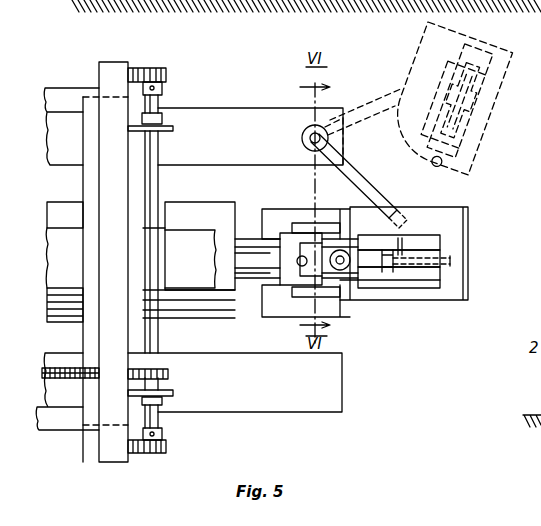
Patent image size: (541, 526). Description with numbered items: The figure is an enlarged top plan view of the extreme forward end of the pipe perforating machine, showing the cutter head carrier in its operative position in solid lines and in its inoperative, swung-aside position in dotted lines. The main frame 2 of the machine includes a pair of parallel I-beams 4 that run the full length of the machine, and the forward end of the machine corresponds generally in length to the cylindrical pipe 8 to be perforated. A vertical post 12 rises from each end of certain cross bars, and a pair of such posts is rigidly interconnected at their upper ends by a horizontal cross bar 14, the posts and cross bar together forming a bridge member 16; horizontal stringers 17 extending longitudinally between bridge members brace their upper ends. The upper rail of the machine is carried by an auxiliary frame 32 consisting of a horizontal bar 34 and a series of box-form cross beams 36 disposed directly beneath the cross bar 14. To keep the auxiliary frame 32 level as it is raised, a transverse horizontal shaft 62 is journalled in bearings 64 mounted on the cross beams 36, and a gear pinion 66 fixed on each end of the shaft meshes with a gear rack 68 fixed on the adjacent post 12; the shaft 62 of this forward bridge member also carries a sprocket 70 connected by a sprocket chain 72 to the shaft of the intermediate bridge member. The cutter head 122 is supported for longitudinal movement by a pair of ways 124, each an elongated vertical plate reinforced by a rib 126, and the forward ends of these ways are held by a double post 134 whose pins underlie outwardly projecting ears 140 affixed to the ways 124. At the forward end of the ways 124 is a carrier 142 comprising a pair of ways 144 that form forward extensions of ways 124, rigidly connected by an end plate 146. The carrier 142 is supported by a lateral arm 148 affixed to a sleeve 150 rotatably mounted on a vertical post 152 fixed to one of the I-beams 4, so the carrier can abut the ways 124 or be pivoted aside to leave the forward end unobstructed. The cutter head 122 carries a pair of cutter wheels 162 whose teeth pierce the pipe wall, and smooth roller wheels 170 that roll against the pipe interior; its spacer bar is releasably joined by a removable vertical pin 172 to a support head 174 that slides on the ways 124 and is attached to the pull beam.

The main frame 2 is at (100, 60).
The I-beams 4 is at (236, 108).
The cylindrical pipe 8 is at (175, 320).
The vertical post 12 is at (112, 62).
The cross bar 14 is at (107, 262).
The bridge member 16 is at (92, 246).
The horizontal stringers 17 is at (55, 96).
The auxiliary frame 32 is at (179, 220).
The horizontal bar 34 is at (193, 233).
The cross beams 36 is at (84, 180).
The transverse horizontal shaft 62 is at (160, 152).
The bearings 64 is at (166, 120).
The gear pinion 66 is at (168, 74).
The gear rack 68 is at (138, 68).
The sprocket 70 is at (168, 380).
The sprocket chain 72 is at (83, 390).
The cutter head 122 is at (423, 298).
The ways 124 is at (245, 238).
The rib 126 is at (258, 243).
The post 134 is at (340, 270).
The ears 140 is at (294, 210).
The carrier 142 is at (476, 261).
The ways 144 is at (452, 238).
The end plate 146 is at (470, 270).
The lateral arm 148 is at (359, 181).
The sleeve 150 is at (364, 121).
The vertical post 152 is at (302, 139).
The cutter wheels 162 is at (448, 252).
The roller wheels 170 is at (400, 251).
The removable vertical pin 172 is at (340, 271).
The support head 174 is at (312, 228).